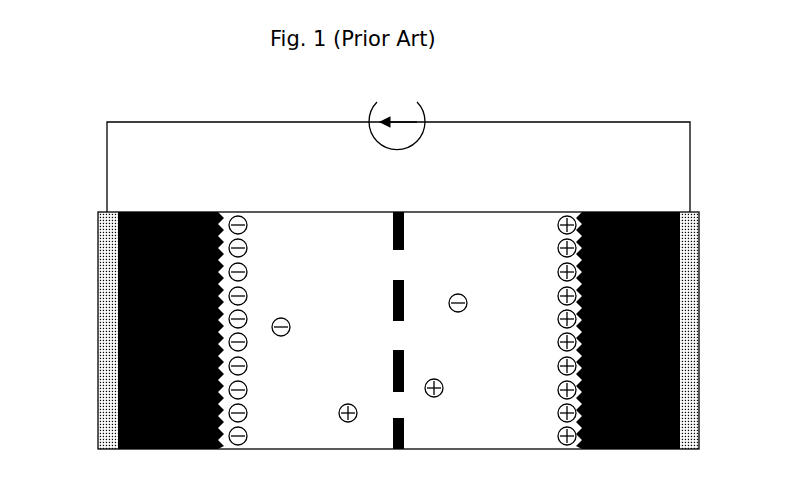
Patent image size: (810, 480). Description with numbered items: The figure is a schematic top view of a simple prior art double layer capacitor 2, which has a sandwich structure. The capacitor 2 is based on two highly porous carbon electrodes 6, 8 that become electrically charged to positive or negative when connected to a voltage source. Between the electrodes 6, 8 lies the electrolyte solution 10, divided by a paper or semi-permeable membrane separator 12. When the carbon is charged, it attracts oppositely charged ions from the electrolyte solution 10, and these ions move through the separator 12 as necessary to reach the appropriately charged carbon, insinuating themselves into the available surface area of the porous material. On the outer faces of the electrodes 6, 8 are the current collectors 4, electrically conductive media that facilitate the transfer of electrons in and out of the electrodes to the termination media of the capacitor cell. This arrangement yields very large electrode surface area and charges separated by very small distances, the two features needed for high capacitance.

The capacitor 2 is at (86, 96).
The current collectors 4 is at (95, 330).
The porous carbon electrode 6 is at (158, 209).
The porous carbon electrode 8 is at (636, 209).
The electrolyte solution 10 is at (402, 330).
The separator 12 is at (408, 287).